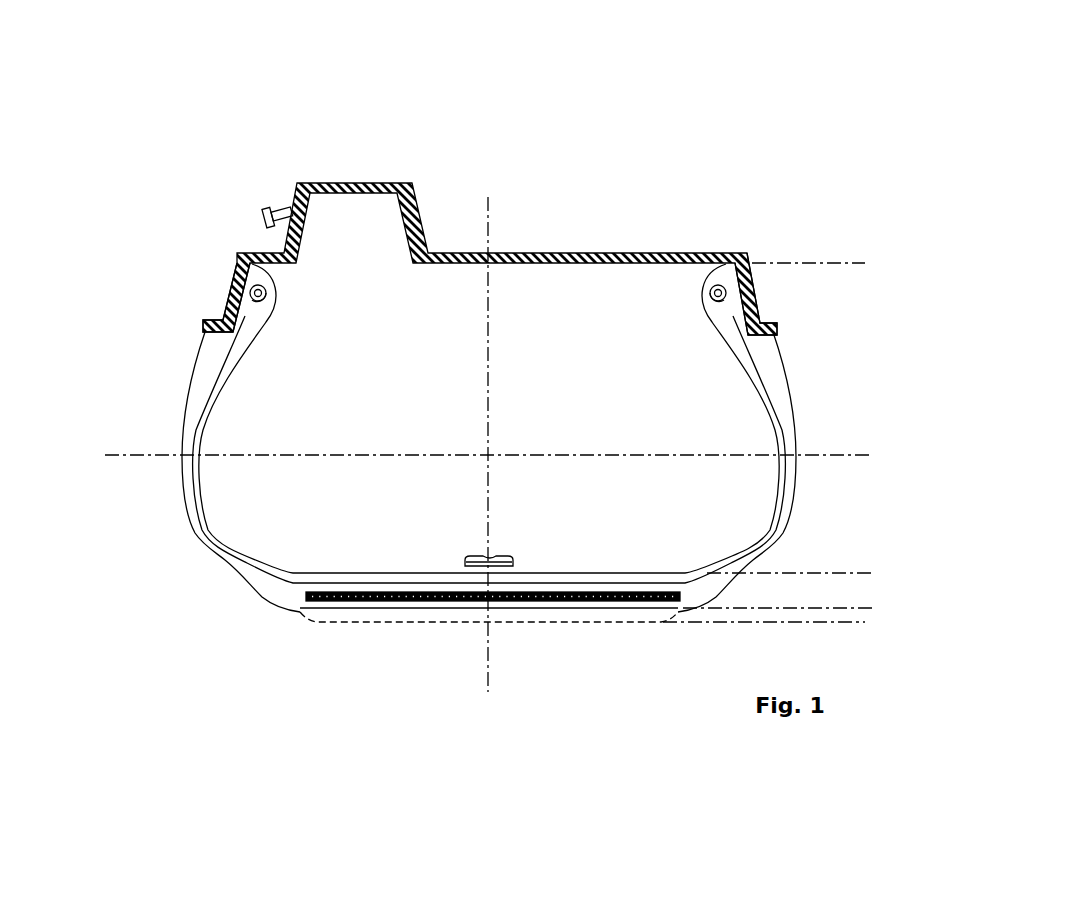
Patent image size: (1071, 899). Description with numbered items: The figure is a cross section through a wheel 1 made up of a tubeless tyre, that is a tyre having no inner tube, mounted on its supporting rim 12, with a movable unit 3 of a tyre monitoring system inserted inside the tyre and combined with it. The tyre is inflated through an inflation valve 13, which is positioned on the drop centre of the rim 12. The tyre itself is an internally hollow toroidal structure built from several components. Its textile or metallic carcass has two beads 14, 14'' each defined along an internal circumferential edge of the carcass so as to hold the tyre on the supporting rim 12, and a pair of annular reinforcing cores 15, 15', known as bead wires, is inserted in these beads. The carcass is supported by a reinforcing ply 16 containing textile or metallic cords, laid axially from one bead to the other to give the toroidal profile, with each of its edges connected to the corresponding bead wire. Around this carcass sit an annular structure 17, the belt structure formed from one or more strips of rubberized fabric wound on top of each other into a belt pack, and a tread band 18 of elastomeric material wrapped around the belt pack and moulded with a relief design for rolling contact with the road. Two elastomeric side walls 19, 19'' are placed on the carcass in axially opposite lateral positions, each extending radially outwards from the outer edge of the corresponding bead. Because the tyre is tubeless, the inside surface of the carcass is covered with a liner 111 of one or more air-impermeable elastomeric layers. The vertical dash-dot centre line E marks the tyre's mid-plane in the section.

The wheel 1 is at (754, 146).
The equatorial plane E is at (490, 293).
The supporting rim 12 is at (437, 257).
The inflation valve 13 is at (285, 212).
The bead 14 is at (183, 284).
The bead 14'' is at (832, 294).
The annular reinforcing core 15 is at (316, 320).
The annular reinforcing core 15' is at (653, 324).
The reinforcing ply 16 is at (213, 540).
The annular structure 17 is at (303, 595).
The tread band 18 is at (543, 612).
The side wall 19 is at (167, 472).
The side wall 19'' is at (811, 472).
The liner 111 is at (433, 572).
The movable unit 3 is at (508, 556).